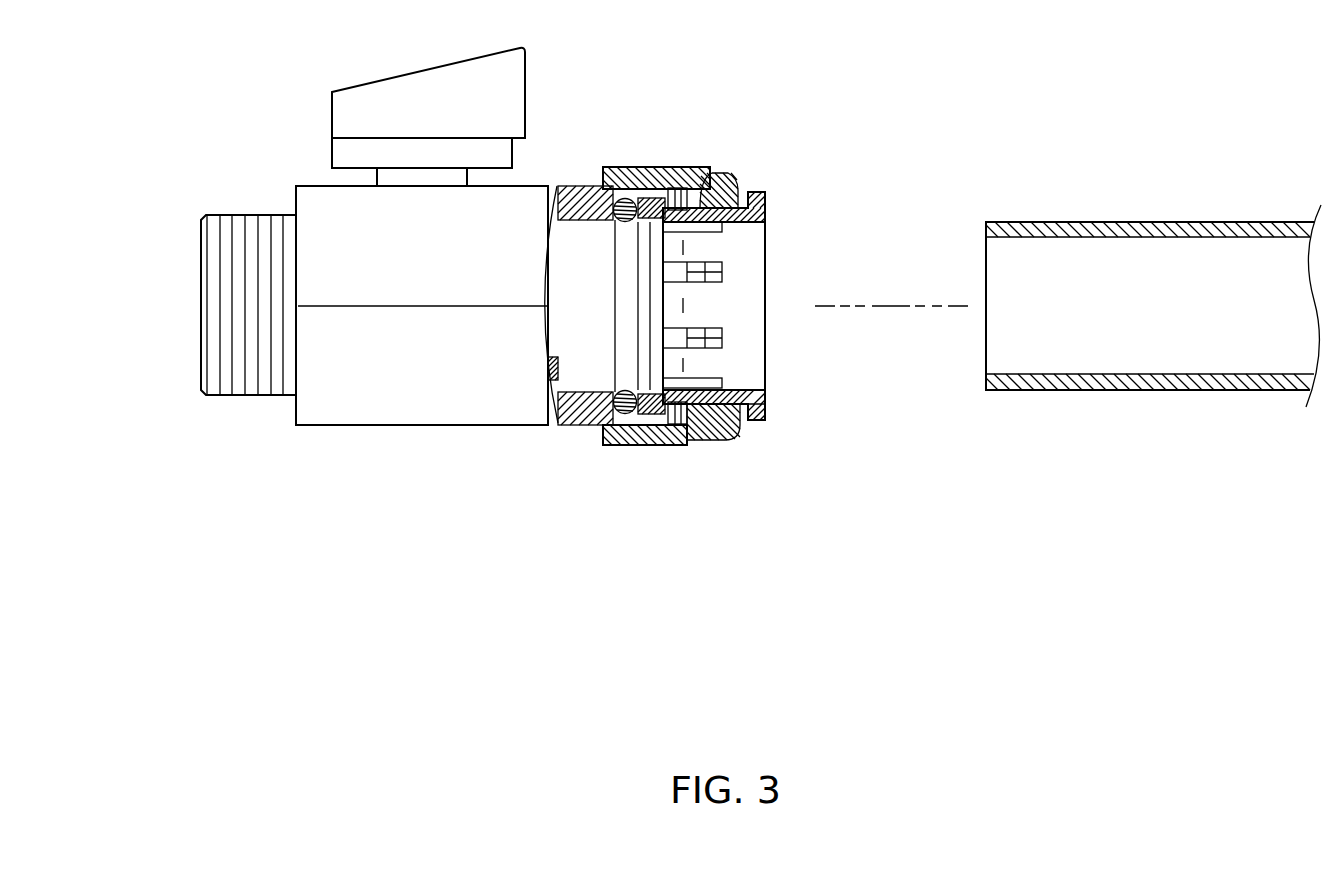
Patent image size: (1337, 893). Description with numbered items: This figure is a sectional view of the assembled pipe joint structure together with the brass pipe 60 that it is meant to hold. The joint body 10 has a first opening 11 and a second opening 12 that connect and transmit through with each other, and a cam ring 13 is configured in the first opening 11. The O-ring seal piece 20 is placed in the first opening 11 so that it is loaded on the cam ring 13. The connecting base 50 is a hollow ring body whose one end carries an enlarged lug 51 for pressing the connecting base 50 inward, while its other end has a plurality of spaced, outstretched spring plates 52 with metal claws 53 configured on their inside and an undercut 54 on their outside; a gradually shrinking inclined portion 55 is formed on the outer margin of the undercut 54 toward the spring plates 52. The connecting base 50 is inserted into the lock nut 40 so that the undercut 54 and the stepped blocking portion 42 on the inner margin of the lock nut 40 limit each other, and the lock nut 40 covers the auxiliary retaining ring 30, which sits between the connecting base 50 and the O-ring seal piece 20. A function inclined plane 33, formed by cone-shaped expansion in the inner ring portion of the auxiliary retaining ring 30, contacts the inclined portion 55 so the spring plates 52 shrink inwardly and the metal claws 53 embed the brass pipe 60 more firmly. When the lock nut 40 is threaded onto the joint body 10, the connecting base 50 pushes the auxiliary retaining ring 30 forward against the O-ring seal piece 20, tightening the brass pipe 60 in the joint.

The joint body 10 is at (308, 183).
The first opening 11 is at (550, 378).
The second opening 12 is at (201, 305).
The cam ring 13 is at (612, 402).
The O-ring seal piece 20 is at (601, 204).
The auxiliary retaining ring 30 is at (645, 193).
The function inclined plane 33 is at (656, 448).
The lock nut 40 is at (721, 436).
The stepped blocking portion 42 is at (738, 143).
The connecting base 50 is at (765, 187).
The enlarged lug 51 is at (764, 412).
The spring plates 52 is at (708, 296).
The metal claws 53 is at (684, 386).
The undercut 54 is at (690, 199).
The inclined portion 55 is at (698, 442).
The brass pipe 60 is at (1249, 217).